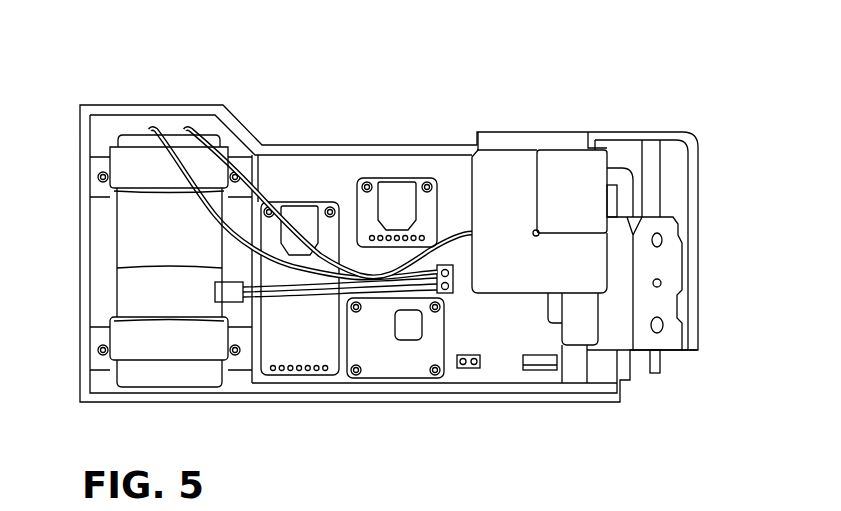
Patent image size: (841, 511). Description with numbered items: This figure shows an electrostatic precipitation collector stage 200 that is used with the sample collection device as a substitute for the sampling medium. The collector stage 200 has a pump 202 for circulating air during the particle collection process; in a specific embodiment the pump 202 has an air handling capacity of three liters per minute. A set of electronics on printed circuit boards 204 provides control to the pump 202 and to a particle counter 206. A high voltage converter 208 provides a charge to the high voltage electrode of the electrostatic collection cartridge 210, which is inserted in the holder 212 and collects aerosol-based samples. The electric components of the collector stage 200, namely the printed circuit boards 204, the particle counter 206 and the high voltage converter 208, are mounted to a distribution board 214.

The electrostatic precipitation collector stage 200 is at (240, 62).
The pump 202 is at (120, 283).
The printed circuit boards 204 is at (383, 357).
The particle counter 206 is at (504, 163).
The high voltage converter 208 is at (577, 332).
The electrostatic collection cartridge 210 is at (661, 367).
The holder 212 is at (663, 267).
The distribution board 214 is at (383, 162).